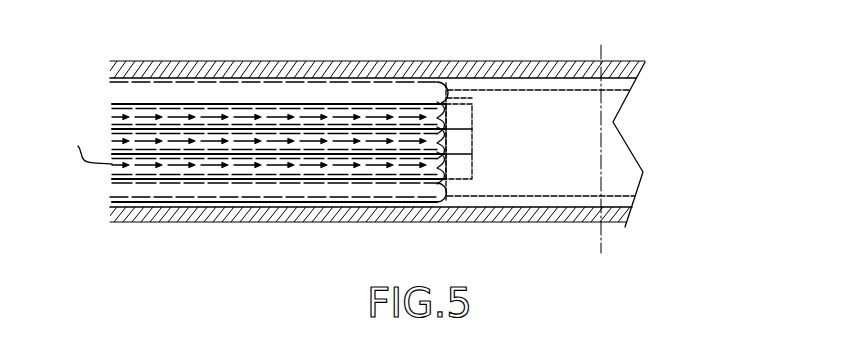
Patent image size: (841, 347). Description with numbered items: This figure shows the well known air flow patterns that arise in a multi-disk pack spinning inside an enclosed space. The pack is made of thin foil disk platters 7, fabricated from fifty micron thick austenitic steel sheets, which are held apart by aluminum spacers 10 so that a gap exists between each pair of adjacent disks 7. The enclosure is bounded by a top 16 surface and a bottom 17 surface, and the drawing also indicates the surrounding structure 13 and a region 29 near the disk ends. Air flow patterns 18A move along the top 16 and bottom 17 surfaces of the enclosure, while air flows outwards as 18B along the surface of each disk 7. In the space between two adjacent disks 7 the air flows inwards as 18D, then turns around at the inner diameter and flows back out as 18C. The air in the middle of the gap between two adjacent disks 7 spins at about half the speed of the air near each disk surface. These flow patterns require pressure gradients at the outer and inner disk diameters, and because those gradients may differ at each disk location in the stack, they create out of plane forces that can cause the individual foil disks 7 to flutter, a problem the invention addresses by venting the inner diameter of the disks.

The top surface of the enclosure 16 is at (264, 71).
The bottom surface of the enclosure 17 is at (326, 211).
The tube 13 is at (620, 192).
The disk platter 7 is at (445, 101).
The connecting passage 29 is at (463, 101).
The spacer 10 is at (463, 170).
The air flow pattern 18A is at (108, 82).
The air flow pattern 18B is at (106, 103).
The air flow pattern 18C is at (108, 113).
The air flow pattern 18D is at (106, 140).